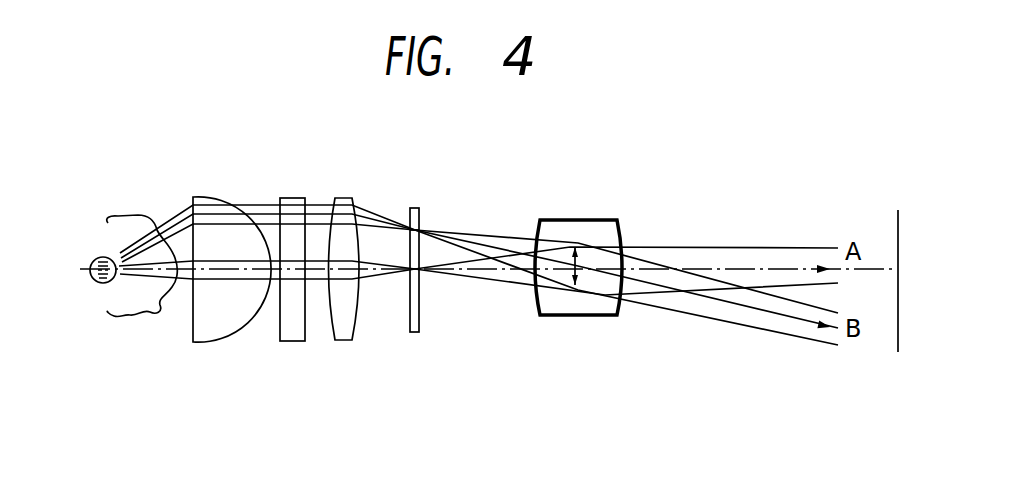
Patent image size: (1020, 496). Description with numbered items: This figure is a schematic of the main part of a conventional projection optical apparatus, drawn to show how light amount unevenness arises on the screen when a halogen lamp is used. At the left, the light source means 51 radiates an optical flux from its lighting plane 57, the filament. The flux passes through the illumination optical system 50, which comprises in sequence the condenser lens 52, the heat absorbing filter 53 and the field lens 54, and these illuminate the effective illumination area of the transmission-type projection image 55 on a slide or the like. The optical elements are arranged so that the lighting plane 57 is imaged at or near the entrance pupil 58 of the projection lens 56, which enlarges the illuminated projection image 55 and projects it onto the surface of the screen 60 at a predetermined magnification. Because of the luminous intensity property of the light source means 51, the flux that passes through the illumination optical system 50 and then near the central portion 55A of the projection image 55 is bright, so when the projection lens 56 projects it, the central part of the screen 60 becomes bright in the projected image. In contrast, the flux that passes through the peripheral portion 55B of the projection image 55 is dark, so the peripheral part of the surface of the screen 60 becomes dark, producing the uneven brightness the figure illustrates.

The illumination optical system 50 is at (285, 330).
The light source means 51 is at (97, 258).
The condenser lens 52 is at (194, 342).
The heat absorbing filter 53 is at (292, 341).
The field lens 54 is at (349, 311).
The projection image 55 is at (414, 332).
The central portion of projection image 55A is at (420, 275).
The peripheral portion of projection image 55B is at (420, 229).
The projection lens 56 is at (597, 316).
The lighting plane 57 is at (96, 282).
The entrance pupil 58 is at (580, 250).
The screen 60 is at (895, 211).